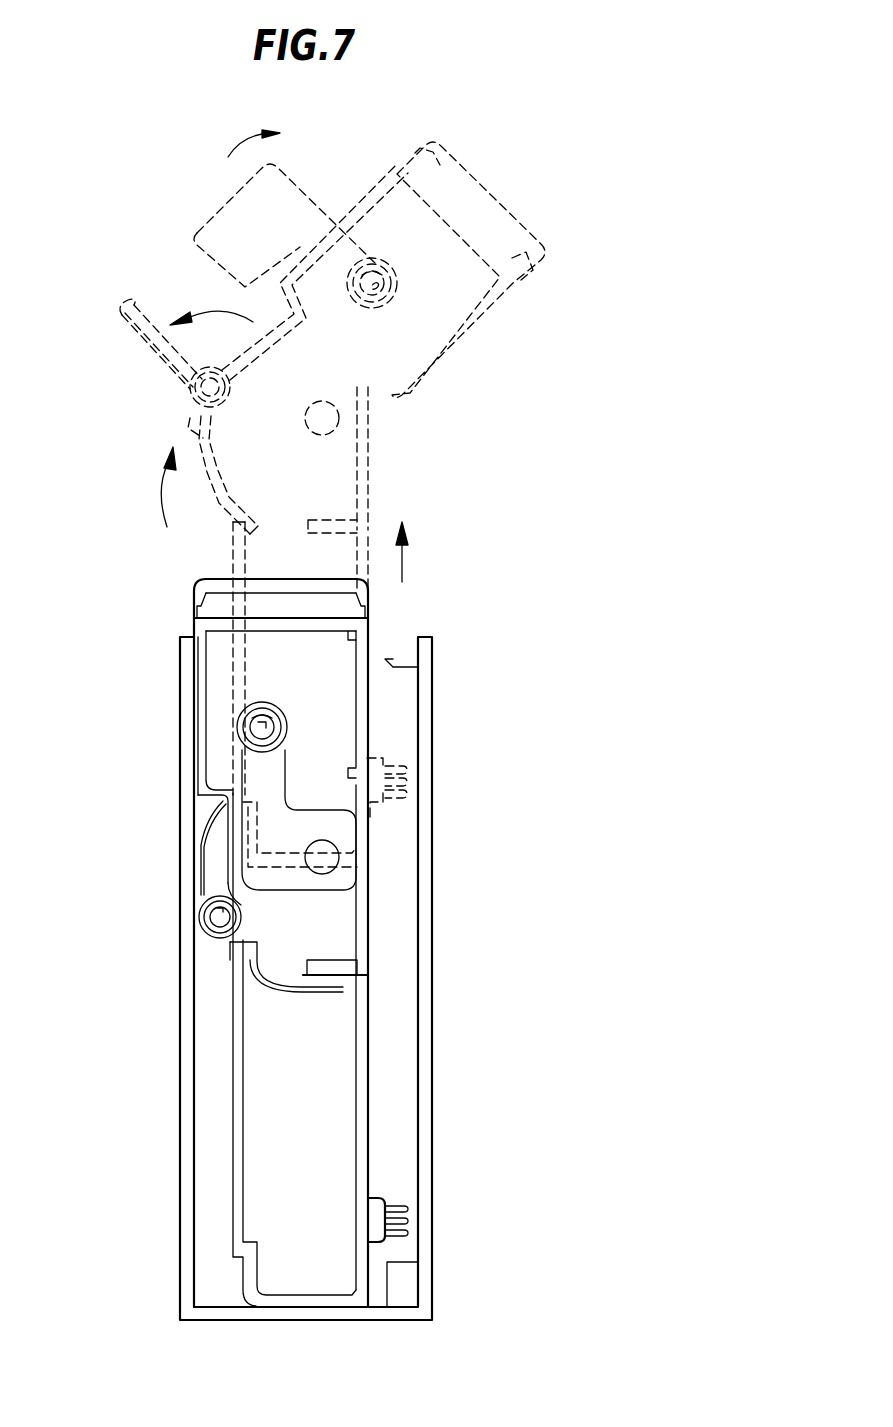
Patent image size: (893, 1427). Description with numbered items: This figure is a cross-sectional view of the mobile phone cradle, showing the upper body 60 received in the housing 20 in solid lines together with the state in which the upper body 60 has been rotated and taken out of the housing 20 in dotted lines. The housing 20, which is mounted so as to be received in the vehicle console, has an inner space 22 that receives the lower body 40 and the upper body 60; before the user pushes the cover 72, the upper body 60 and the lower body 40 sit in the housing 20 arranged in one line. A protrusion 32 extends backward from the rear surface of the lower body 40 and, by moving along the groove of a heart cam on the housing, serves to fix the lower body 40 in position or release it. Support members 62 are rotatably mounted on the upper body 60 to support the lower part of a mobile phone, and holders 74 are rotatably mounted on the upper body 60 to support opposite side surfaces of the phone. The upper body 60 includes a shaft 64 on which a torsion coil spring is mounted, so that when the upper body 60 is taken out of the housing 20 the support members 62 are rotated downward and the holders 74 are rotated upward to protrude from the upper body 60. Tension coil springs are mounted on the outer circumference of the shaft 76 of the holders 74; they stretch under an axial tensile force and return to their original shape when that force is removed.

The housing 20 is at (425, 970).
The inner space 22 is at (383, 1138).
The protrusion 32 is at (410, 1217).
The lower body 40 is at (363, 1067).
The upper body 60 is at (196, 716).
The support members 62 is at (193, 858).
The shaft 64 is at (209, 910).
The cover 72 is at (212, 582).
The holders 74 is at (343, 880).
The shaft 76 is at (255, 731).